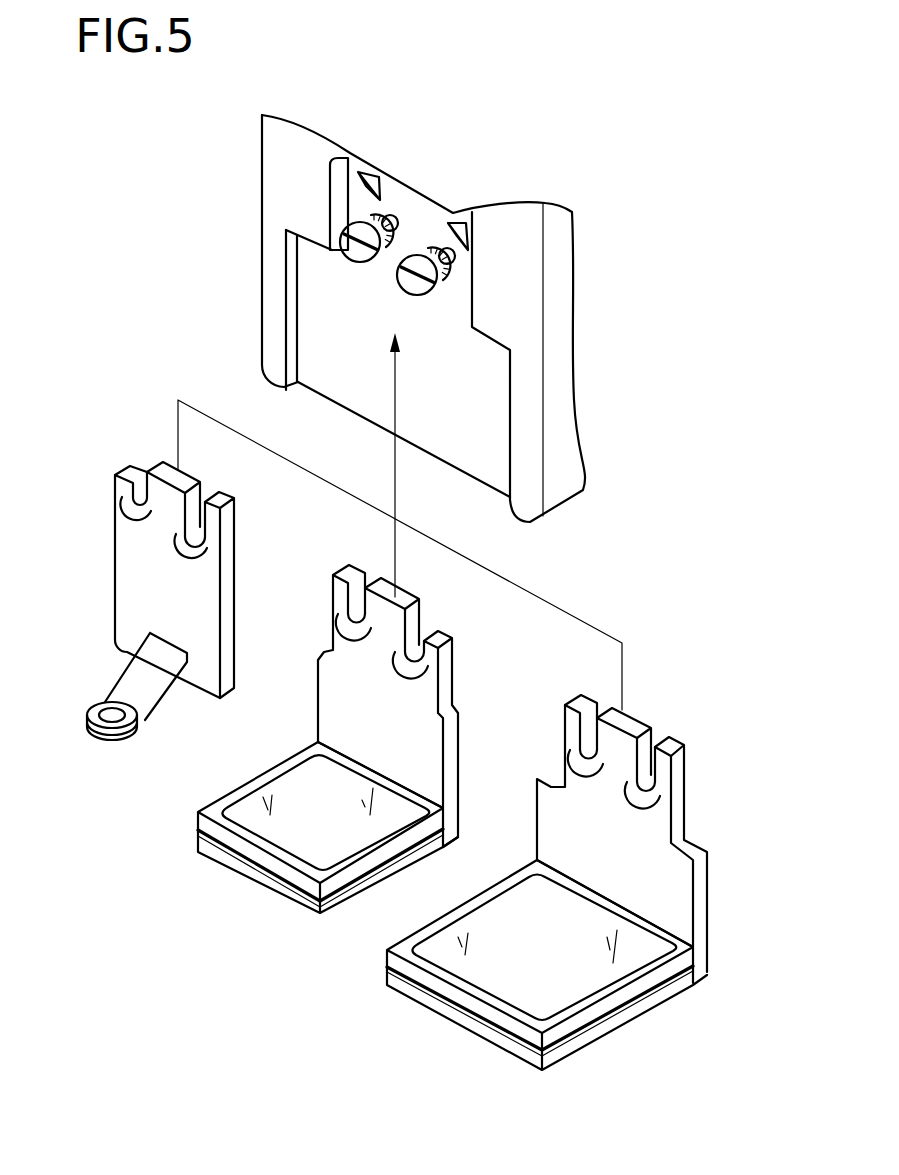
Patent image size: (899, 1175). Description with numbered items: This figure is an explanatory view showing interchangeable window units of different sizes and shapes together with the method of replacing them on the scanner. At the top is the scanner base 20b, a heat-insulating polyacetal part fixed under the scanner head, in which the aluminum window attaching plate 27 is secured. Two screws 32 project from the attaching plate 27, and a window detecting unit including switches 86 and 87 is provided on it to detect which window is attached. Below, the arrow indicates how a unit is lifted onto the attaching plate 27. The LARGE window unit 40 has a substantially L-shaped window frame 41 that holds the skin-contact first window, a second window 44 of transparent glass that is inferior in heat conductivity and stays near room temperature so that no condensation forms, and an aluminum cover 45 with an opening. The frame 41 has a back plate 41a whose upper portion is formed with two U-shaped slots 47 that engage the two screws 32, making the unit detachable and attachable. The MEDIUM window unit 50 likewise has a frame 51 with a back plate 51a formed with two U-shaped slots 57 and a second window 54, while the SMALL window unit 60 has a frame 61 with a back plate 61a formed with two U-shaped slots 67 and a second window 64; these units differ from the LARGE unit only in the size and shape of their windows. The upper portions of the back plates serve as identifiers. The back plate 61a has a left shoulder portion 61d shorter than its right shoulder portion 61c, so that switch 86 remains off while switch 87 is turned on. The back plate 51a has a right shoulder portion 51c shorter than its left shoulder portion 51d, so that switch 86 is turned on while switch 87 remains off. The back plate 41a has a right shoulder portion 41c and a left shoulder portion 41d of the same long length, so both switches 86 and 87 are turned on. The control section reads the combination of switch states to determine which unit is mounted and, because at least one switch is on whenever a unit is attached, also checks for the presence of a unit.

The scanner base 20b is at (512, 262).
The window attaching plate 27 is at (463, 398).
The screws 32 is at (377, 224).
The switch 86 is at (370, 175).
The switch 87 is at (463, 227).
The LARGE window unit 40 is at (420, 1032).
The window frame 41 is at (634, 853).
The back plate 41a is at (710, 887).
The right shoulder portion 41c is at (680, 742).
The left shoulder portion 41d is at (573, 700).
The second window 44 is at (478, 968).
The cover 45 is at (495, 1005).
The U-shaped slots 47 is at (602, 708).
The MEDIUM window unit 50 is at (257, 900).
The frame 51 is at (356, 710).
The back plate 51a is at (460, 742).
The right shoulder portion 51c is at (438, 637).
The left shoulder portion 51d is at (347, 571).
The second window 54 is at (270, 832).
The U-shaped slots 57 is at (372, 577).
The SMALL window unit 60 is at (88, 752).
The frame 61 is at (175, 573).
The back plate 61a is at (238, 573).
The right shoulder portion 61c is at (233, 497).
The left shoulder portion 61d is at (128, 473).
The second window 64 is at (97, 705).
The U-shaped slots 67 is at (141, 462).